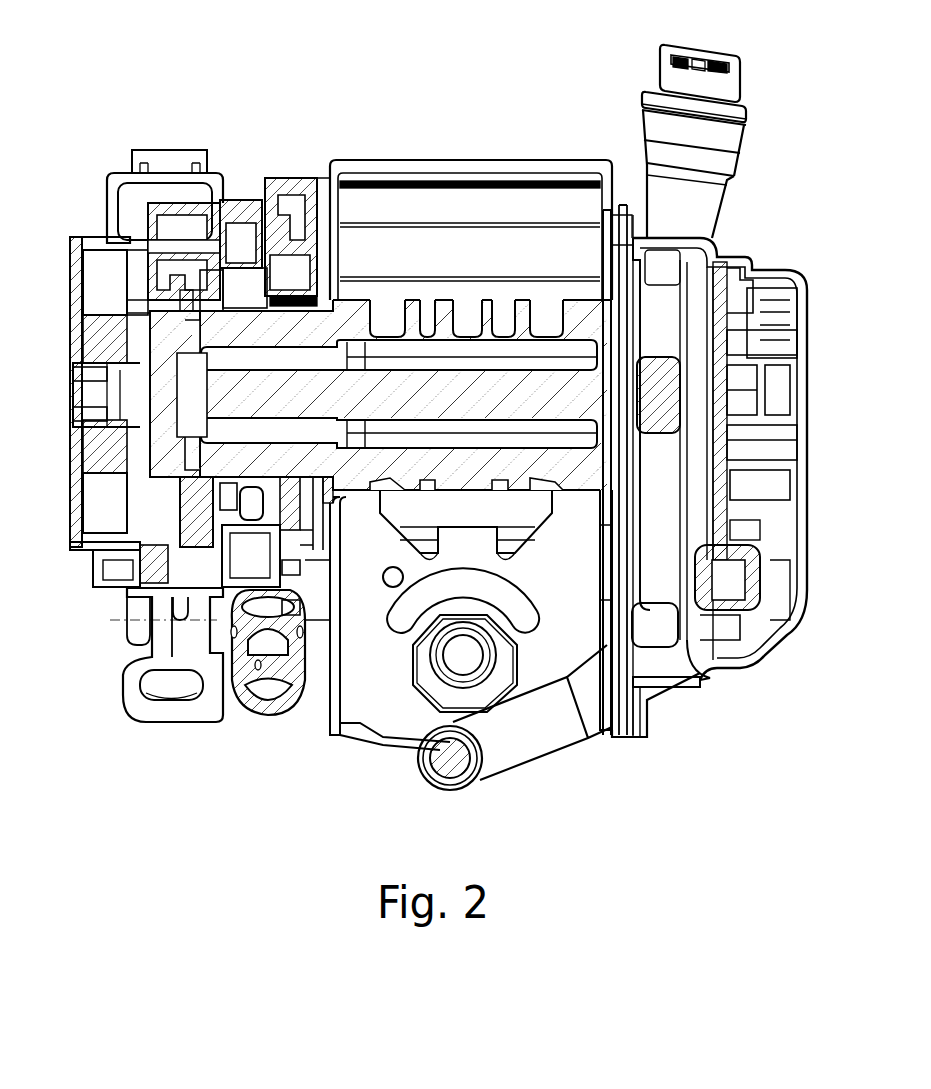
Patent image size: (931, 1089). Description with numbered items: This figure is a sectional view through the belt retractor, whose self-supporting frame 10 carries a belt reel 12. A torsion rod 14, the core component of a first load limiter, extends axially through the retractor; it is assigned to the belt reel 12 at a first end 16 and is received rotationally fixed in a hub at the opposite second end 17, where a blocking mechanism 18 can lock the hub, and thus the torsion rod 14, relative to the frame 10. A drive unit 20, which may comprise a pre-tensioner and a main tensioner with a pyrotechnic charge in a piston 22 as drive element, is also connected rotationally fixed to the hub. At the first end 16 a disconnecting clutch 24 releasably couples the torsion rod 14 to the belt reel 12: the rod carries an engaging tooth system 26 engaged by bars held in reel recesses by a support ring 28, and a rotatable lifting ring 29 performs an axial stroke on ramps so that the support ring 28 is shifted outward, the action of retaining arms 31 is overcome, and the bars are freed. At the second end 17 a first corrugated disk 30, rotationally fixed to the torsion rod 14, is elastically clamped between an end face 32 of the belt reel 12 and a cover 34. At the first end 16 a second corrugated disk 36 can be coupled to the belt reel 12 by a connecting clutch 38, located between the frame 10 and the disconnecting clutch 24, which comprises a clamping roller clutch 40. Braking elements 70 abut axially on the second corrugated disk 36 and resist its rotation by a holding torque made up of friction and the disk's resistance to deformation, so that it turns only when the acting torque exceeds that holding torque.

The frame 10 is at (363, 693).
The belt reel 12 is at (477, 323).
The torsion rod 14 is at (437, 333).
The first end 16 is at (222, 490).
The second end 17 is at (570, 290).
The blocking mechanism 18 is at (795, 258).
The drive unit 20 is at (667, 712).
The piston 22 is at (548, 713).
The disconnecting clutch 24 is at (172, 735).
The engaging tooth system 26 is at (193, 438).
The support ring 28 is at (205, 270).
The lifting ring 29 is at (215, 262).
The first corrugated disk 30 is at (612, 248).
The retaining arms 31 is at (240, 462).
The end face 32 is at (700, 680).
The cover 34 is at (633, 277).
The second corrugated disk 36 is at (293, 233).
The connecting clutch 38 is at (263, 728).
The clamping roller clutch 40 is at (290, 225).
The braking elements 70 is at (292, 568).